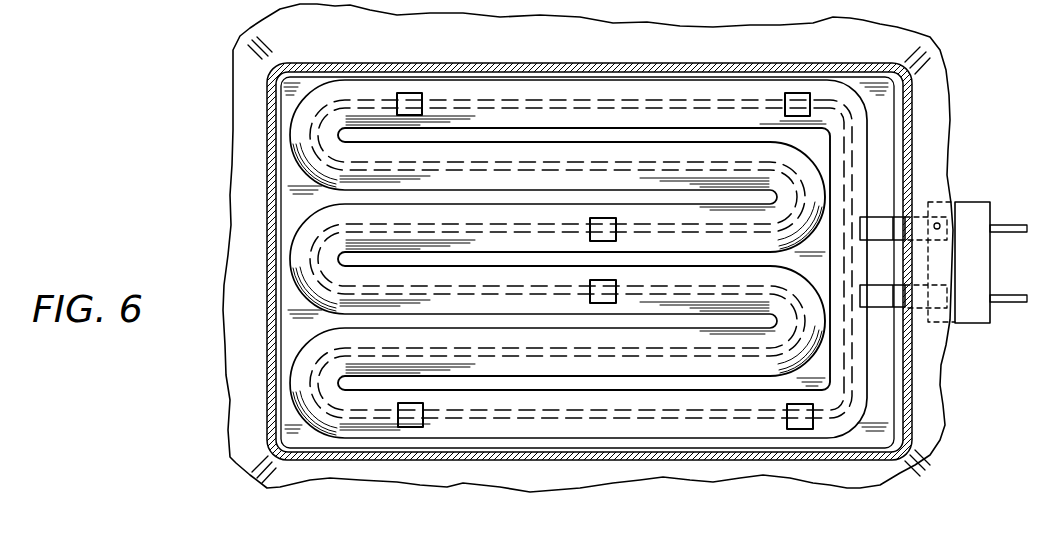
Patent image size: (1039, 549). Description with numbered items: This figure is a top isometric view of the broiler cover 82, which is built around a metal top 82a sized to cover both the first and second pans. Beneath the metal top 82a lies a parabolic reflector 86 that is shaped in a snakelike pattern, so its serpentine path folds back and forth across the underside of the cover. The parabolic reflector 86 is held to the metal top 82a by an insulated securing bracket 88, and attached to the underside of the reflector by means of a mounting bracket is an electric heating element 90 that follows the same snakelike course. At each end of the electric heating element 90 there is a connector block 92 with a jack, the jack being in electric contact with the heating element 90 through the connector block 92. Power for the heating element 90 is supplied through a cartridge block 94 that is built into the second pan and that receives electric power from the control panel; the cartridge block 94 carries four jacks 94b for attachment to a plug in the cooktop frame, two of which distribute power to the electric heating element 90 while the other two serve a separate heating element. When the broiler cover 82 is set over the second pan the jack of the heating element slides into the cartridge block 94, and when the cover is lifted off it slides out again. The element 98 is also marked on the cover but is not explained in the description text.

The heater panel 82 is at (178, 116).
The peripheral frame edge of panel 82a is at (291, 464).
The lower retaining clip 86 is at (388, 432).
The upper retaining clip 88 is at (412, 92).
The serpentine heating element 90 is at (641, 421).
The terminal aperture 92 is at (937, 222).
The electrical connector 94 is at (972, 212).
The connector terminal pins 94b is at (1019, 303).
The panel edge 98 is at (246, 303).